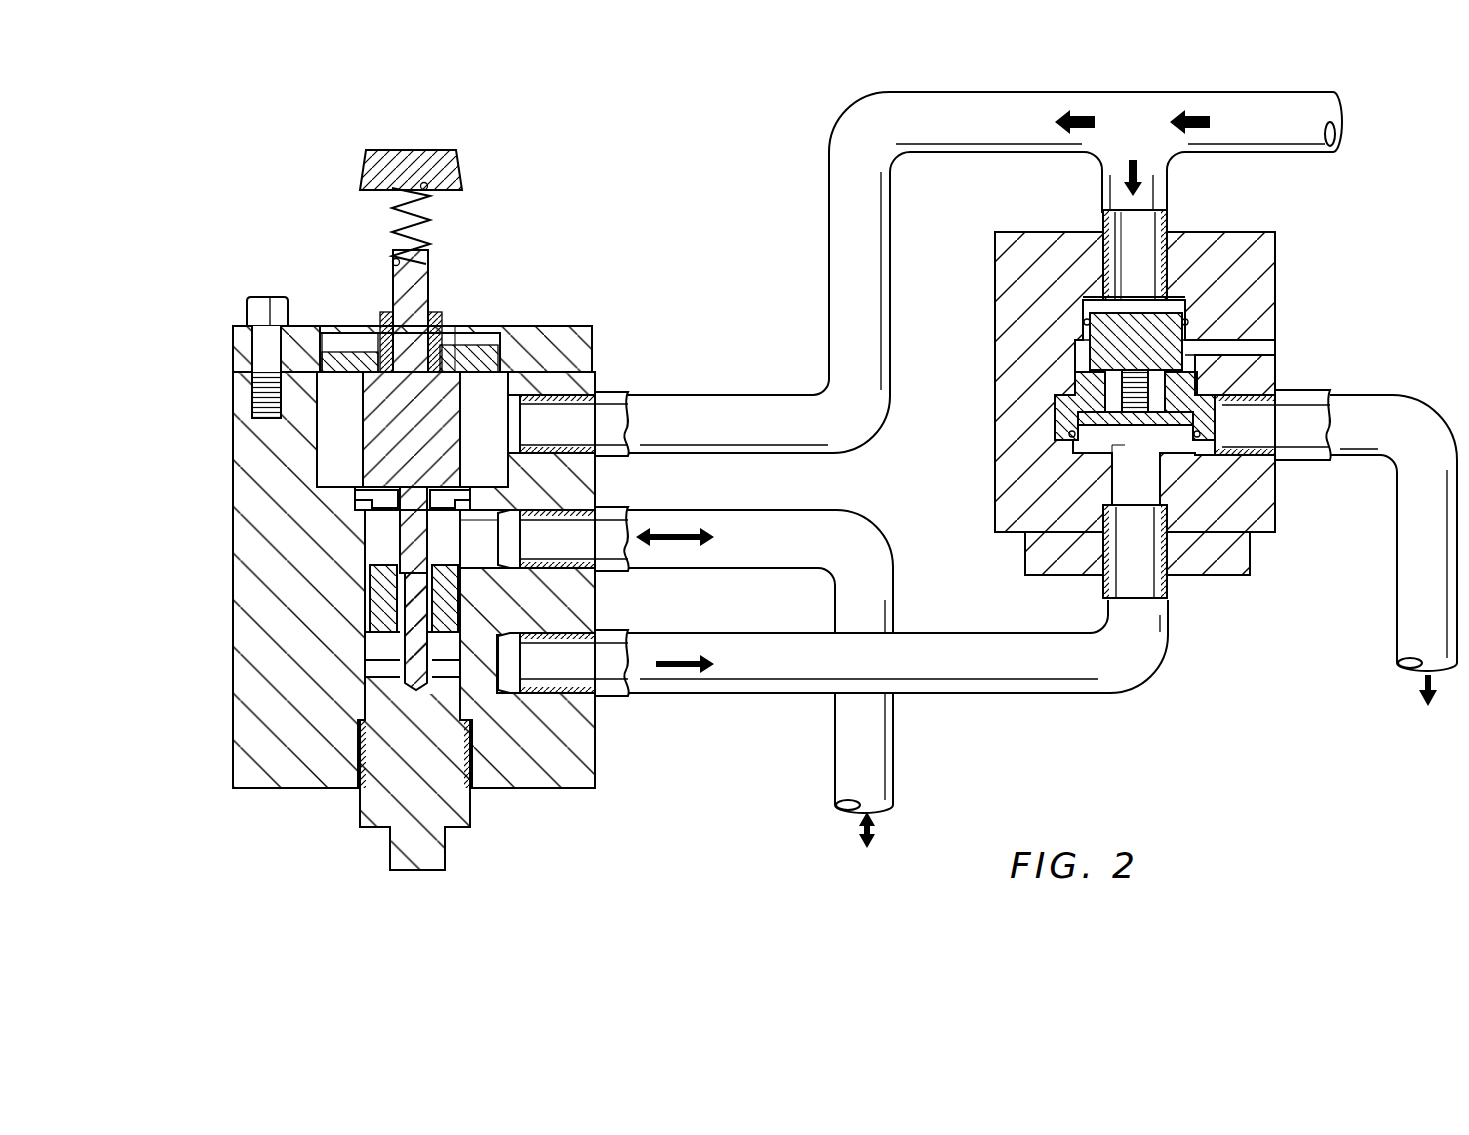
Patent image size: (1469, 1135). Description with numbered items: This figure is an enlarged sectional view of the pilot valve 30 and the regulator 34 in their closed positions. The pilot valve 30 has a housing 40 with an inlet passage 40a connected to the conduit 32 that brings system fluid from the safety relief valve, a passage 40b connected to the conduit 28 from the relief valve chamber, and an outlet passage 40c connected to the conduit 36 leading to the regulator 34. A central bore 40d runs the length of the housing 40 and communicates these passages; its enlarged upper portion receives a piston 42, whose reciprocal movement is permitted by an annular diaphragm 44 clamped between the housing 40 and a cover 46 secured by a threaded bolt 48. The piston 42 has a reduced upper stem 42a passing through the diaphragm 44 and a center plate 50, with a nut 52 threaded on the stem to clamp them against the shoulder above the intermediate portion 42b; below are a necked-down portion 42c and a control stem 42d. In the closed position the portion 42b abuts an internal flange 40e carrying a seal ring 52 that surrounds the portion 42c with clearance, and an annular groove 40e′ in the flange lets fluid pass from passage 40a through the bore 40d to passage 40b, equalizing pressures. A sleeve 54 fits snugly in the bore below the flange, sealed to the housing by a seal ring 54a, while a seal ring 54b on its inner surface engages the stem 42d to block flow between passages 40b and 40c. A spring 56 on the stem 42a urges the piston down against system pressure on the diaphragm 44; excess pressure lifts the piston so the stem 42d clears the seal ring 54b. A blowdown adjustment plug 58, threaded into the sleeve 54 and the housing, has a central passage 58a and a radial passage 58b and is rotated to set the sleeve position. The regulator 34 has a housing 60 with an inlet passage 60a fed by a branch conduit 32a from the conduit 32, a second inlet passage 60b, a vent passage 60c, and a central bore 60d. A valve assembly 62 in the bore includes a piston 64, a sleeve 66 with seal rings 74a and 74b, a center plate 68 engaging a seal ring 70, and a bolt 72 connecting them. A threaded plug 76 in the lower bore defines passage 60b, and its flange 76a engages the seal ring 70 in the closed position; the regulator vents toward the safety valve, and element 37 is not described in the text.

The conduit 28 is at (886, 760).
The pilot valve 30 is at (216, 288).
The conduit 32 is at (882, 92).
The branch conduit 32a is at (1100, 178).
The regulator 34 is at (1275, 258).
The conduit 36 is at (728, 694).
The tube to safety valve 37 is at (1385, 395).
The housing 40 is at (233, 467).
The inlet passage 40a is at (598, 408).
The passage 40b is at (592, 550).
The outlet passage 40c is at (592, 675).
The bore 40d is at (464, 411).
The internal flange 40e is at (466, 520).
The annular groove 40e′ is at (496, 487).
The piston 42 is at (392, 282).
The upper stem 42a is at (430, 286).
The intermediate portion 42b is at (392, 411).
The necked-down portion 42c is at (410, 492).
The control stem 42d is at (498, 548).
The annular diaphragm 44 is at (512, 340).
The cover 46 is at (560, 328).
The threaded bolt 48 is at (268, 297).
The center plate 50 is at (460, 345).
The nut / seal ring 52 is at (380, 342).
The sleeve 54 is at (384, 602).
The seal ring 54a is at (376, 586).
The seal ring 54b is at (394, 566).
The spring 56 is at (390, 228).
The blowdown adjustment plug 58 is at (404, 779).
The central passage 58a is at (410, 632).
The radial passage 58b is at (372, 668).
The housing 60 is at (995, 258).
The inlet passage 60a is at (1150, 218).
The second inlet passage 60b is at (1142, 588).
The vent passage 60c is at (1302, 452).
The central bore 60d is at (1105, 482).
The valve assembly 62 is at (1134, 296).
The piston 64 is at (1235, 338).
The sleeve 66 is at (1068, 400).
The center plate 68 is at (1212, 416).
The seal ring 70 is at (1060, 433).
The bolt 72 is at (1138, 370).
The seal ring 74a is at (1075, 385).
The seal ring 74b is at (1085, 322).
The plug 76 is at (1250, 556).
The flange 76a is at (1150, 445).